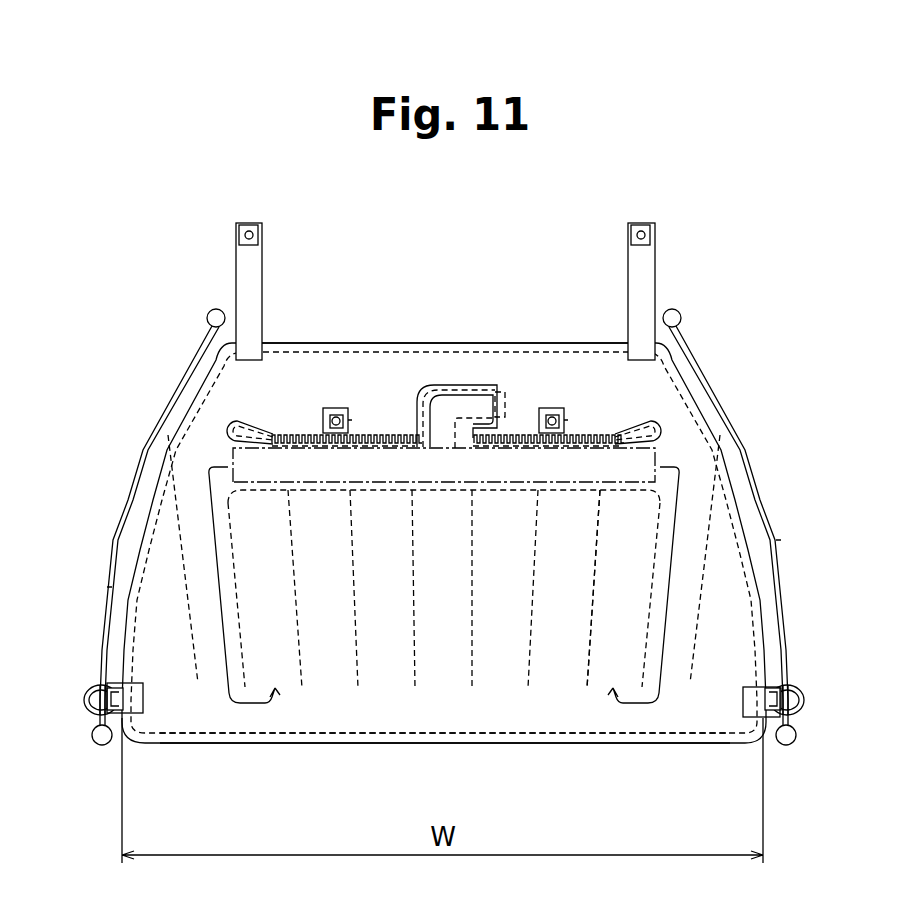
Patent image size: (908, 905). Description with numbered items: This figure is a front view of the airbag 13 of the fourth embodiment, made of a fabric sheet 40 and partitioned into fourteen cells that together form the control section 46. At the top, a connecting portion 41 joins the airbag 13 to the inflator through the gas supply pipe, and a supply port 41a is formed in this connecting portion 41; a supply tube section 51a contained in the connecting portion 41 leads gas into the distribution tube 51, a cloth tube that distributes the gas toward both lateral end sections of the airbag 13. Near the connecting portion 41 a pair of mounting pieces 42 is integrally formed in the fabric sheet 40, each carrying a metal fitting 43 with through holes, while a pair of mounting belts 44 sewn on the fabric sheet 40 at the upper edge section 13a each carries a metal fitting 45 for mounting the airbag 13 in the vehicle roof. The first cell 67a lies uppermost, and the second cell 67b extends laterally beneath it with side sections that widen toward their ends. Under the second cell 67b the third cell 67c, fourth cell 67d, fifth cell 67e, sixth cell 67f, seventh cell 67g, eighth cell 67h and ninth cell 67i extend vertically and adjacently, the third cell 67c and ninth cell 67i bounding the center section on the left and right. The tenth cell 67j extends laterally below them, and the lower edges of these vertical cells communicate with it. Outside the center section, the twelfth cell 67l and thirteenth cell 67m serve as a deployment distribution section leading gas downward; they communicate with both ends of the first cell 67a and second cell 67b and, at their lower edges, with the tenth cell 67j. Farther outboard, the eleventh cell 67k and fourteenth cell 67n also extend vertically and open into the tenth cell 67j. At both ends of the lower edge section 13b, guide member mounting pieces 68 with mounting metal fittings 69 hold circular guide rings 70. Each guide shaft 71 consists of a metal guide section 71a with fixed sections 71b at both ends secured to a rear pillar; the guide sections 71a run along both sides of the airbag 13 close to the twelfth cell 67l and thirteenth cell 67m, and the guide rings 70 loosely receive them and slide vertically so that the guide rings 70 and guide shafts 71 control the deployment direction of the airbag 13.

The airbag 13 is at (476, 259).
The upper edge section 13a is at (328, 342).
The lower edge section 13b is at (602, 745).
The fabric sheet 40 is at (700, 397).
The connecting portion 41 is at (428, 387).
The supply port 41a is at (500, 390).
The mounting piece 42 is at (336, 408).
The metal fitting 43 is at (348, 420).
The mounting belt 44 is at (235, 268).
The metal fitting 45 is at (258, 233).
The control section 46 is at (772, 623).
The distribution tube 51 is at (298, 485).
The supply tube section 51a is at (470, 387).
The first cell 67a is at (250, 407).
The second cell 67b is at (643, 467).
The third cell 67c is at (290, 585).
The fourth cell 67d is at (302, 585).
The fifth cell 67e is at (363, 585).
The sixth cell 67f is at (423, 585).
The seventh cell 67g is at (482, 585).
The eighth cell 67h is at (542, 585).
The ninth cell 67i is at (602, 585).
The tenth cell 67j is at (468, 723).
The eleventh cell 67k is at (148, 695).
The twelfth cell 67l is at (203, 527).
The thirteenth cell 67m is at (685, 557).
The fourteenth cell 67n is at (695, 698).
The guide member mounting piece 68 is at (107, 683).
The mounting metal fitting 69 is at (93, 690).
The guide ring 70 is at (87, 703).
The guide shaft 71 is at (113, 540).
The guide section 71a is at (107, 587).
The fixed section 71b is at (207, 313).